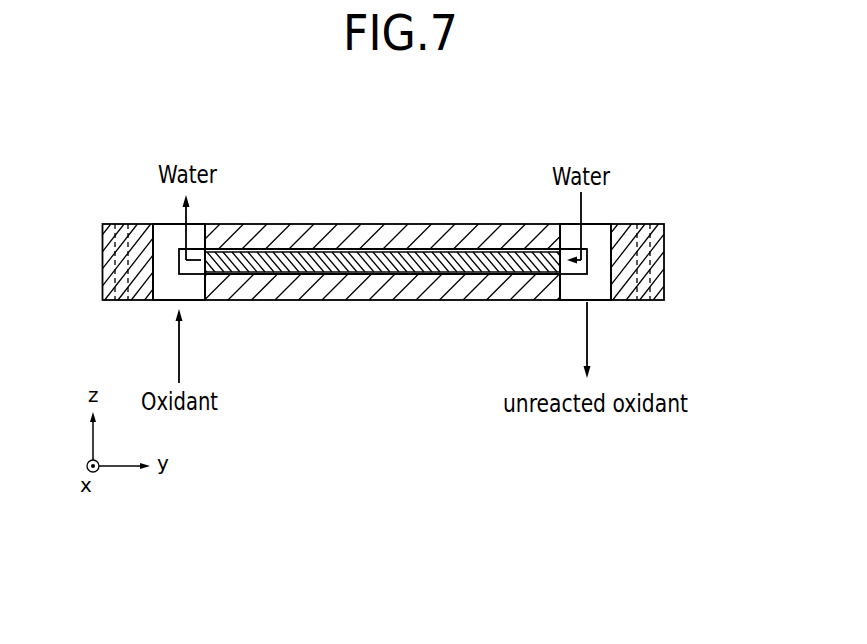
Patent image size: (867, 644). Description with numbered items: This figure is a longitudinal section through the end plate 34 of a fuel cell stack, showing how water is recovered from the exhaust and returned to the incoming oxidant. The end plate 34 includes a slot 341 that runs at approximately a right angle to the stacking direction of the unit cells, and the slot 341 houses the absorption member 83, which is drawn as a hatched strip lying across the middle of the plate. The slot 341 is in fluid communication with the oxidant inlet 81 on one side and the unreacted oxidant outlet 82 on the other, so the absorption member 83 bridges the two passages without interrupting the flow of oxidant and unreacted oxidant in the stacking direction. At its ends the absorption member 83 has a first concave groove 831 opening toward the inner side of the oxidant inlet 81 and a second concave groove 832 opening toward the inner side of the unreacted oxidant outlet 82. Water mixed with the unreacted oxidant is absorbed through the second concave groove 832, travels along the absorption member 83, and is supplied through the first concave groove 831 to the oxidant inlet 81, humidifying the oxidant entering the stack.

The end plate 34 is at (664, 240).
The slot 341 is at (435, 272).
The absorption member 83 is at (388, 263).
The oxidant inlet 81 is at (172, 235).
The unreacted oxidant outlet 82 is at (595, 235).
The first concave groove 831 is at (202, 263).
The second concave groove 832 is at (573, 274).